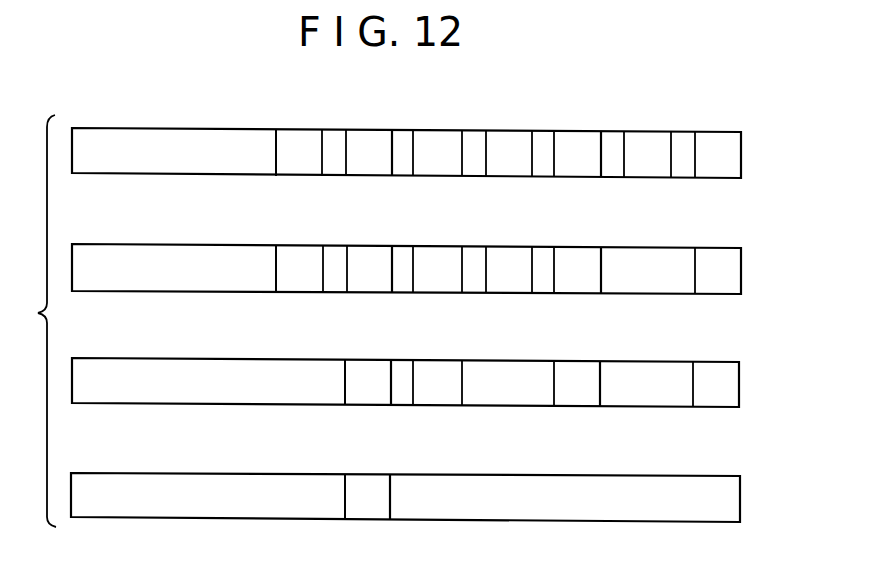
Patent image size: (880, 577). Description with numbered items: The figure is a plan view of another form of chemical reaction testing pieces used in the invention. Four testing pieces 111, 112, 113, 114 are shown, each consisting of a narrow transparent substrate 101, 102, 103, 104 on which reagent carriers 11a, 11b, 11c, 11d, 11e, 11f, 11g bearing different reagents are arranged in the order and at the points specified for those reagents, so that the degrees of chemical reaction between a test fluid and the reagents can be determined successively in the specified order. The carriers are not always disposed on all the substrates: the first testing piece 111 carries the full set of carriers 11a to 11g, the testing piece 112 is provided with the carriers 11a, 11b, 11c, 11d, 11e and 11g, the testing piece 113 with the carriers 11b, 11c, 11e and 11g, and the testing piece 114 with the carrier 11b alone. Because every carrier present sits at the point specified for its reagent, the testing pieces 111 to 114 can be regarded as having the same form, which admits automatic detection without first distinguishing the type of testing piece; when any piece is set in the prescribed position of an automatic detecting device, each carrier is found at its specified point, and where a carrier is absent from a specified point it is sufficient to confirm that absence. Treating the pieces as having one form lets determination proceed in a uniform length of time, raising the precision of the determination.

The transparent substrate 101 is at (225, 174).
The transparent substrate 102 is at (231, 291).
The transparent substrate 103 is at (280, 404).
The transparent substrate 104 is at (286, 519).
The chemical reaction testing piece 111 is at (184, 127).
The chemical reaction testing piece 112 is at (186, 243).
The chemical reaction testing piece 113 is at (188, 359).
The chemical reaction testing piece 114 is at (187, 473).
The reagent carrier 11a is at (297, 129).
The reagent carrier 11b is at (368, 129).
The reagent carrier 11c is at (436, 130).
The reagent carrier 11d is at (507, 130).
The reagent carrier 11e is at (573, 130).
The reagent carrier 11f is at (638, 130).
The reagent carrier 11g is at (714, 130).